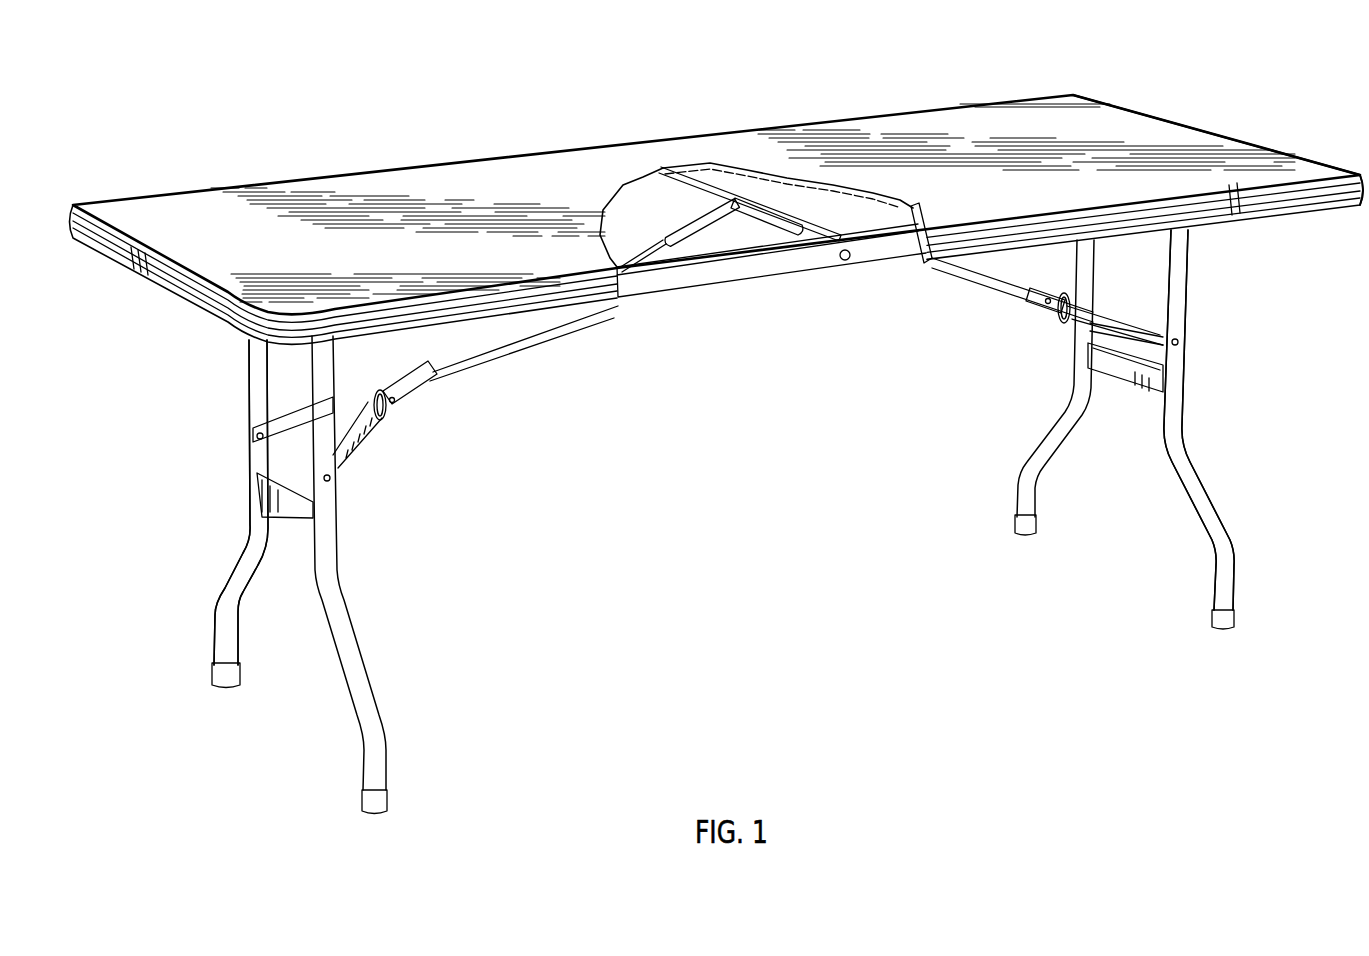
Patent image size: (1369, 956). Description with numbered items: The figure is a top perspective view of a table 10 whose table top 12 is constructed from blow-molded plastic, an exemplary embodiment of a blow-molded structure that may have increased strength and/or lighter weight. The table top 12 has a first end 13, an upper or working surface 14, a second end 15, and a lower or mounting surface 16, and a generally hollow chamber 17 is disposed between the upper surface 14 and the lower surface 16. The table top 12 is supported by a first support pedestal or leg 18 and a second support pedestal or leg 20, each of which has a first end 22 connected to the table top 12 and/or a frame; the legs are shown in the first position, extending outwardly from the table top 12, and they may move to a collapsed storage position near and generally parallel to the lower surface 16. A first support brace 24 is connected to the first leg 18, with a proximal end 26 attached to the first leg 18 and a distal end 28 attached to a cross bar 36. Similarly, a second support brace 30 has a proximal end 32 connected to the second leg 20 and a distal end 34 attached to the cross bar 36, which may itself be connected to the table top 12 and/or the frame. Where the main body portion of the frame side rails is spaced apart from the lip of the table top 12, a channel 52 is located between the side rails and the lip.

The table 10 is at (327, 146).
The table top 12 is at (937, 95).
The first end 13 is at (112, 285).
The upper or working surface 14 is at (983, 211).
The second end 15 is at (1173, 101).
The lower or mounting surface 16 is at (877, 193).
The chamber 17 is at (636, 182).
The first support pedestal or leg 18 is at (350, 587).
The second support pedestal or leg 20 is at (1220, 481).
The first end 22 is at (253, 379).
The first support brace 24 is at (485, 366).
The proximal end 26 is at (381, 415).
The distal end 28 is at (698, 232).
The second support brace 30 is at (959, 286).
The proximal end 32 is at (1088, 311).
The distal end 34 is at (777, 212).
The cross bar 36 is at (773, 224).
The channel 52 is at (910, 247).